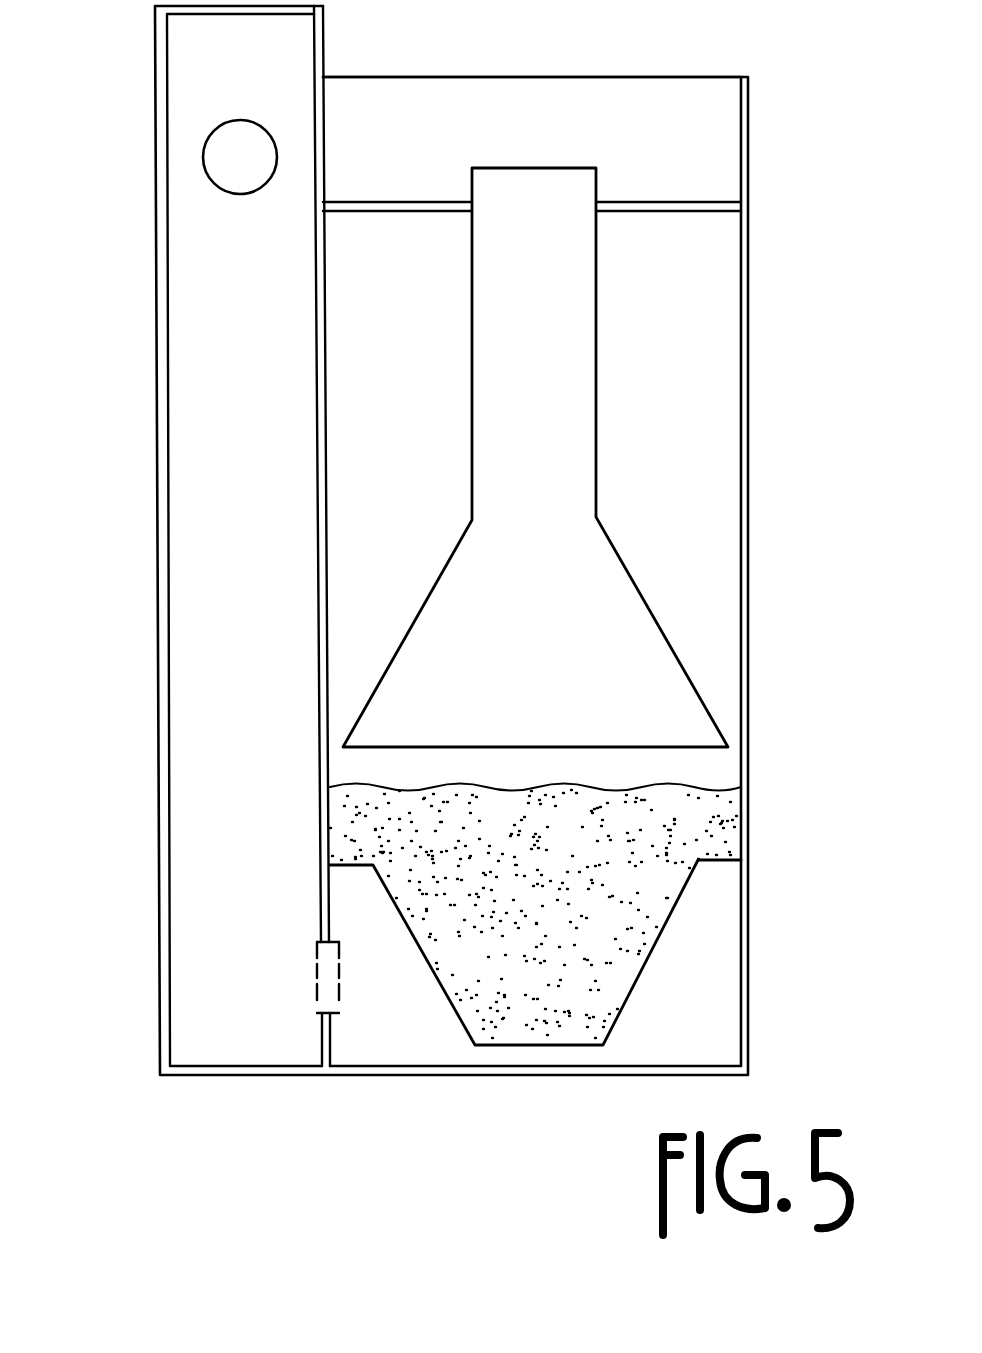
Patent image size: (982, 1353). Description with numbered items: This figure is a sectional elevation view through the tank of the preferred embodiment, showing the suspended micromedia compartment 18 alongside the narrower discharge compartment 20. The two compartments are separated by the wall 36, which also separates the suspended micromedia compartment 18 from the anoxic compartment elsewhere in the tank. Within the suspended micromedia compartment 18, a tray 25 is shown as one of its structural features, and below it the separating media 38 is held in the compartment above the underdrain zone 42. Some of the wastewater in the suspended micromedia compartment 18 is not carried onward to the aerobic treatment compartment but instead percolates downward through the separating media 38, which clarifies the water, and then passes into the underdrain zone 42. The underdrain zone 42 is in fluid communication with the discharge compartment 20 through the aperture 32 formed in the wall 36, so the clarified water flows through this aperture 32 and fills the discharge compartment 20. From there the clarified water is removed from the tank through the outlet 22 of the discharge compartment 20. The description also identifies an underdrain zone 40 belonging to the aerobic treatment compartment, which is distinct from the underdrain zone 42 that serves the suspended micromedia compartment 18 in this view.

The suspended micromedia compartment 18 is at (557, 137).
The discharge compartment 20 is at (258, 280).
The outlet 22 is at (225, 141).
The tray 25 is at (678, 206).
The aperture 32 is at (317, 968).
The wall 36 is at (323, 440).
The separating media 38 is at (705, 820).
The underdrain zone 40 is at (535, 457).
The underdrain zone 42 is at (708, 1025).